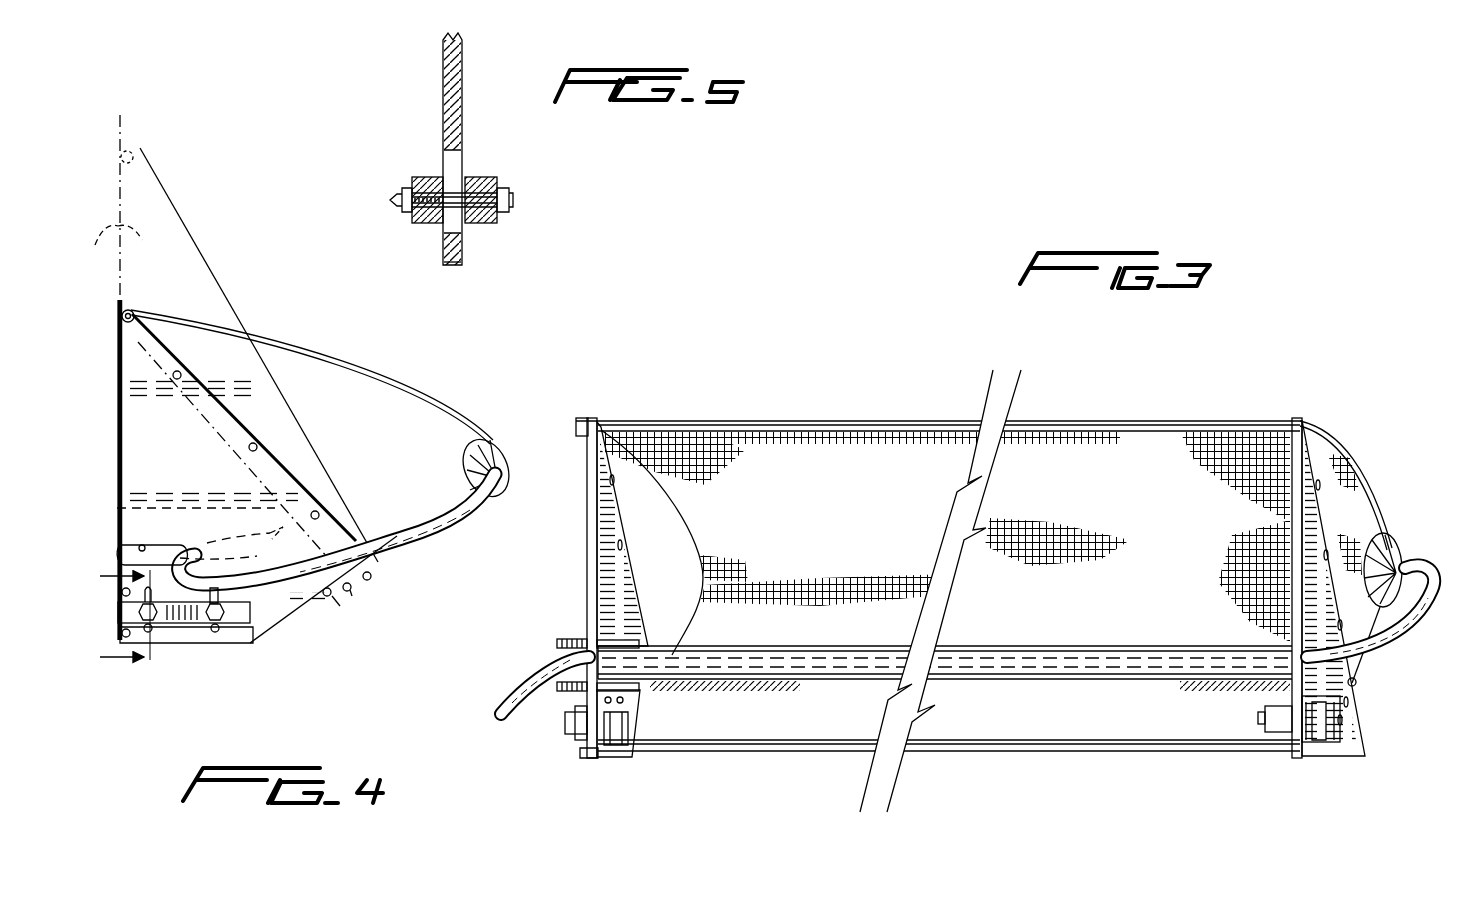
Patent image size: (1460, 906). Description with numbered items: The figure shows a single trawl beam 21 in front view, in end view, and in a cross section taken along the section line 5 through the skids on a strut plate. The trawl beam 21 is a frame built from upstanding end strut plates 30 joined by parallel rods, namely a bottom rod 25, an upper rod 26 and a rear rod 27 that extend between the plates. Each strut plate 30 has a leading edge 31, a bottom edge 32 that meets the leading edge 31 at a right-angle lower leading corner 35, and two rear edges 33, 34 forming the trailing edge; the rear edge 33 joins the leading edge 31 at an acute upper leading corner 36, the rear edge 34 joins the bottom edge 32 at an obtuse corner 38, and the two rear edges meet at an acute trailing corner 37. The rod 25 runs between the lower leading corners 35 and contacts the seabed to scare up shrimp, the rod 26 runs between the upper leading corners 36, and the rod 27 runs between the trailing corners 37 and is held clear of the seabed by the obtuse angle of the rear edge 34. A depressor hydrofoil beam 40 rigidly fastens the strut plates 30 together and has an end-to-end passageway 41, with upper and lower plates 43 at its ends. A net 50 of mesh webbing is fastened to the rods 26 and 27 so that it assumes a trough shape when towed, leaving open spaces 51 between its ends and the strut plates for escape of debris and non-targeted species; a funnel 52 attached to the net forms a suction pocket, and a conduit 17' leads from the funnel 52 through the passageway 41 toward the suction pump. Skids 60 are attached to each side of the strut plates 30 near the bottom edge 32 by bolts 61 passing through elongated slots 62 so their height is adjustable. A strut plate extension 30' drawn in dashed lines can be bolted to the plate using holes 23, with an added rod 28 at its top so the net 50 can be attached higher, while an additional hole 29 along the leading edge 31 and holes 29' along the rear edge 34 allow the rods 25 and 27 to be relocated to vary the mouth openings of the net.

In FIG. 4, the section line 5 is at (114, 618).
In FIG. 4, the conduit 17' is at (337, 533).
In FIG. 3, the conduit 17' is at (967, 647).
In FIG. 3, the trawl beam 21 is at (912, 378).
In FIG. 4, the holes 23 is at (180, 372).
In FIG. 4, the rod 25 is at (126, 648).
In FIG. 3, the rod 25 is at (758, 752).
In FIG. 4, the rod 26 is at (125, 325).
In FIG. 3, the rod 26 is at (780, 420).
In FIG. 4, the rod 27 is at (390, 550).
In FIG. 3, the rod 27 is at (1356, 686).
In FIG. 4, the rod 28 is at (122, 140).
In FIG. 4, the hole 29 is at (84, 596).
In FIG. 4, the holes 29' is at (383, 633).
In FIG. 5, the strut plate 30 is at (406, 149).
In FIG. 4, the strut plate 30 is at (204, 470).
In FIG. 3, the strut plate 30 is at (943, 588).
In FIG. 4, the strut plate extension 30' is at (109, 249).
In FIG. 4, the leading edge 31 is at (117, 465).
In FIG. 5, the bottom edge 32 is at (452, 266).
In FIG. 4, the bottom edge 32 is at (180, 645).
In FIG. 4, the rear edge 33 is at (236, 412).
In FIG. 4, the rear edge 34 is at (332, 600).
In FIG. 4, the lower leading corner 35 is at (120, 636).
In FIG. 4, the upper leading corner 36 is at (122, 310).
In FIG. 4, the trailing corner 37 is at (368, 582).
In FIG. 4, the corner 38 is at (240, 625).
In FIG. 4, the depressor hydrofoil beam 40 is at (207, 543).
In FIG. 3, the depressor hydrofoil beam 40 is at (700, 668).
In FIG. 4, the passageway 41 is at (128, 545).
In FIG. 3, the upper and lower plates 43 is at (570, 638).
In FIG. 4, the net 50 is at (365, 362).
In FIG. 3, the net 50 is at (856, 538).
In FIG. 3, the open spaces 51 is at (598, 514).
In FIG. 4, the funnel 52 is at (497, 437).
In FIG. 3, the funnel 52 is at (1385, 533).
In FIG. 5, the skids 60 is at (412, 173).
In FIG. 4, the skids 60 is at (255, 622).
In FIG. 5, the bolts 61 is at (513, 200).
In FIG. 4, the bolts 61 is at (213, 645).
In FIG. 5, the elongated slots 62 is at (453, 153).
In FIG. 4, the elongated slots 62 is at (262, 545).